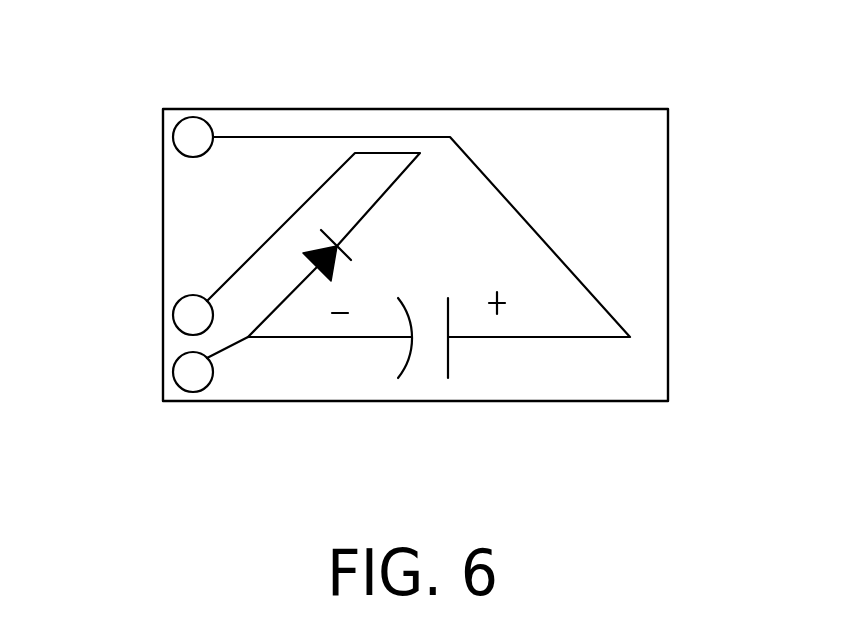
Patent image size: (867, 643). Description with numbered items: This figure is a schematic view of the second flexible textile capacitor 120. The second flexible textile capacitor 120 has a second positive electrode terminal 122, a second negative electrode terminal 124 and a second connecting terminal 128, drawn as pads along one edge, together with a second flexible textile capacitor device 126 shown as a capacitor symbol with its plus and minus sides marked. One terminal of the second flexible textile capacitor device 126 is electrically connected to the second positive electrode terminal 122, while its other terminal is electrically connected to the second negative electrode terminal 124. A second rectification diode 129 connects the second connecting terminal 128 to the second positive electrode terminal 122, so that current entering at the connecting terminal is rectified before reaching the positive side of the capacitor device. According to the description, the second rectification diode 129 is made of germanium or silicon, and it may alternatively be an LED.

The second flexible textile capacitor 120 is at (767, 497).
The second positive electrode terminal 122 is at (185, 128).
The second negative electrode terminal 124 is at (185, 382).
The second flexible textile capacitor device 126 is at (468, 365).
The second connecting terminal 128 is at (187, 303).
The second rectification diode 129 is at (358, 250).